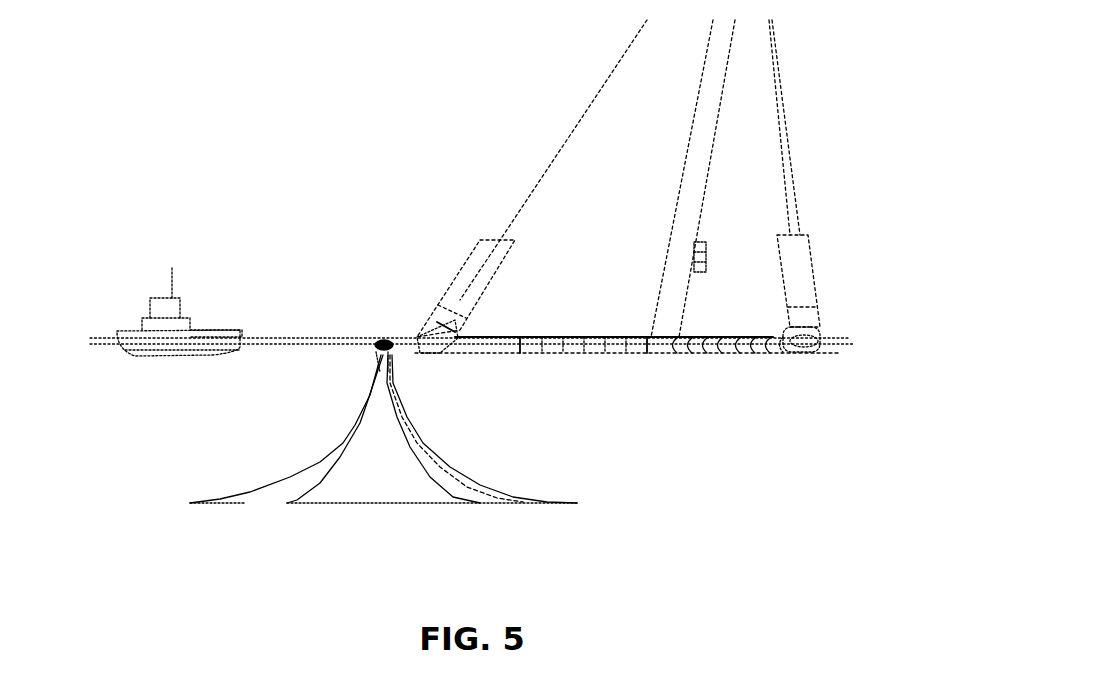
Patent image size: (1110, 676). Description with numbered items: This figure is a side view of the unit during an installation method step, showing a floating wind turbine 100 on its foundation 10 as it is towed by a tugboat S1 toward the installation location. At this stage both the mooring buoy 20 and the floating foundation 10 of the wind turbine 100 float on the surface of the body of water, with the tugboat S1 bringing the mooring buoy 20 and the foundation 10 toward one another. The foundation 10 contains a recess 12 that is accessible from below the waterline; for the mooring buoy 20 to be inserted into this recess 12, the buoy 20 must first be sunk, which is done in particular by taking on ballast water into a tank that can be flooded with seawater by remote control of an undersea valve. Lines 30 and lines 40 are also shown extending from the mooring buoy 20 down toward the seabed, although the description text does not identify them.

The floating wind turbine 100 is at (480, 156).
The foundation 10 is at (752, 364).
The recess 12 is at (430, 364).
The mooring buoy 20 is at (378, 345).
The mooring lines 30 is at (343, 447).
The risers 40 is at (447, 478).
The tugboat S1 is at (138, 337).